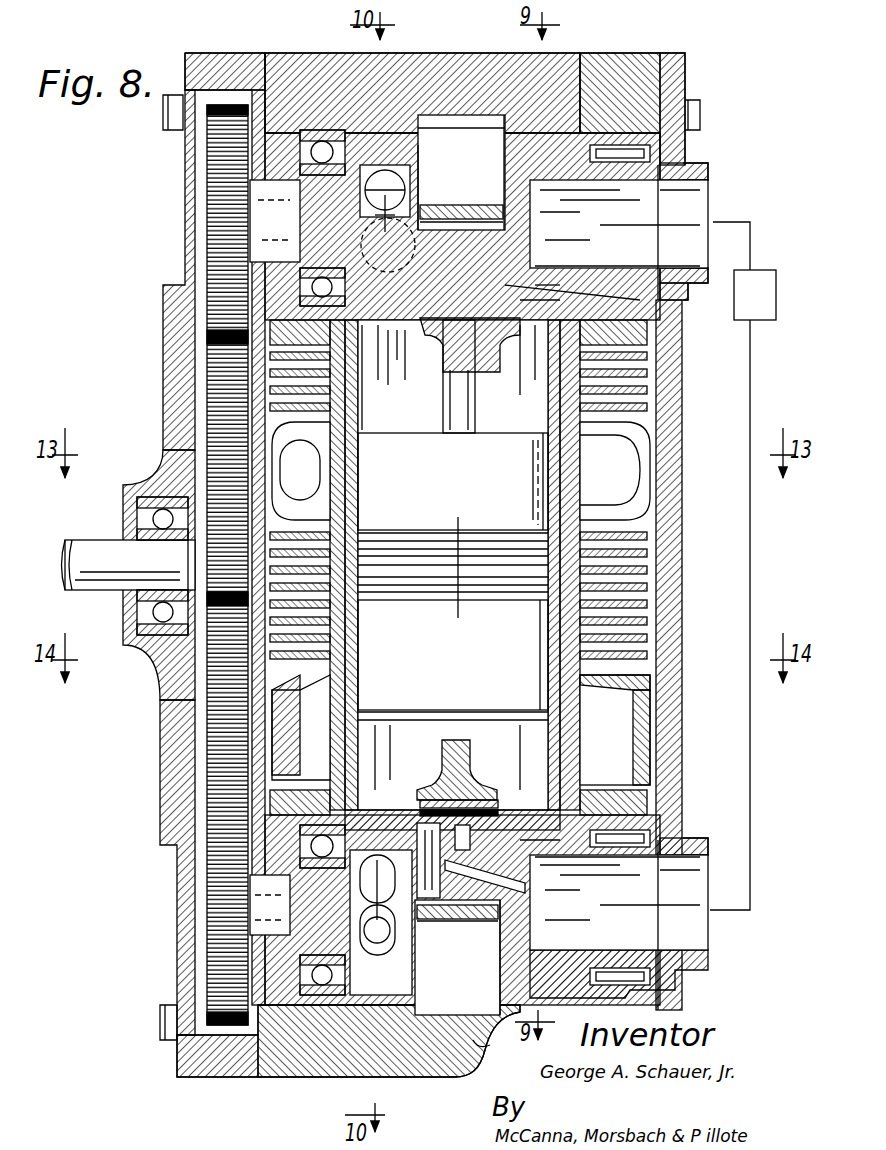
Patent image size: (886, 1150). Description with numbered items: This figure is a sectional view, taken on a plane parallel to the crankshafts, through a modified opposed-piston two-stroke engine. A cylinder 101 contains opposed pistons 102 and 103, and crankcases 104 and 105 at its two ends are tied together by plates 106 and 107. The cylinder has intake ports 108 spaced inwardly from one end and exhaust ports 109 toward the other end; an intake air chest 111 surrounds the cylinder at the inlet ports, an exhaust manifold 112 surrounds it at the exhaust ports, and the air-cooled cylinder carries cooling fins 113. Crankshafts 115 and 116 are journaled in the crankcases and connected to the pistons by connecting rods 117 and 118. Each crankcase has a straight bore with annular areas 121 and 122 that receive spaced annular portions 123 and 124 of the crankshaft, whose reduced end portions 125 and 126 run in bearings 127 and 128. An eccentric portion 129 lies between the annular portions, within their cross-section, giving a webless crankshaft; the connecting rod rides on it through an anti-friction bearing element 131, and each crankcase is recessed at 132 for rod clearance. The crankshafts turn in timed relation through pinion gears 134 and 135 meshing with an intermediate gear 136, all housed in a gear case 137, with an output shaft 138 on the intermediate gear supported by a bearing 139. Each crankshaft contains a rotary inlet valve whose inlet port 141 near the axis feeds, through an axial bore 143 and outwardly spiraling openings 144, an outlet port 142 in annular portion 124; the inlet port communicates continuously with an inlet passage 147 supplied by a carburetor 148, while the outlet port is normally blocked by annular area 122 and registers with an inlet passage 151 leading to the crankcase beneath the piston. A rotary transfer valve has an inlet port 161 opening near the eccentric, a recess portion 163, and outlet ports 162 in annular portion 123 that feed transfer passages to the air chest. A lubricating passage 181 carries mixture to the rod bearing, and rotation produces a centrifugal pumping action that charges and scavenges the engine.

The cylinder 101 is at (360, 517).
The piston 102 is at (472, 484).
The piston 103 is at (457, 658).
The crankcase 104 is at (594, 55).
The crankcase 105 is at (318, 1078).
The plate 106 is at (670, 383).
The plate 107 is at (256, 725).
The intake ports 108 is at (560, 665).
The exhaust ports 109 is at (565, 470).
The intake air chest 111 is at (632, 722).
The exhaust manifold 112 is at (640, 468).
The cooling fins 113 is at (640, 530).
The crankshaft 115 is at (532, 209).
The crankshaft 116 is at (500, 948).
The connecting rod 117 is at (465, 400).
The connecting rod 118 is at (468, 767).
The annular area 121 is at (392, 141).
The annular area 122 is at (520, 142).
The annular portion 123 is at (460, 564).
The annular portion 124 is at (520, 133).
The reduced diameter end portion 125 is at (648, 180).
The reduced diameter end portion 126 is at (300, 240).
The bearing 127 is at (652, 150).
The bearing 128 is at (300, 127).
The eccentric portion 129 is at (415, 328).
The anti-friction bearing element 131 is at (485, 325).
The recess 132 is at (470, 115).
The pinion gear 134 is at (218, 212).
The pinion gear 135 is at (213, 912).
The intermediate gear 136 is at (203, 718).
The gear case 137 is at (184, 167).
The output shaft 138 is at (95, 560).
The bearing 139 is at (140, 605).
The inlet port 141 is at (658, 212).
The outlet port 142 is at (540, 310).
The bore 143 is at (610, 267).
The outwardly extending openings 144 is at (547, 310).
The inlet passage 147 is at (693, 258).
The carburetor 148 is at (770, 288).
The inlet passage 151 is at (533, 820).
The inlet port 161 is at (405, 215).
The outlet ports 162 is at (383, 912).
The recess portion 163 is at (388, 205).
The lubricating passage 181 is at (520, 300).